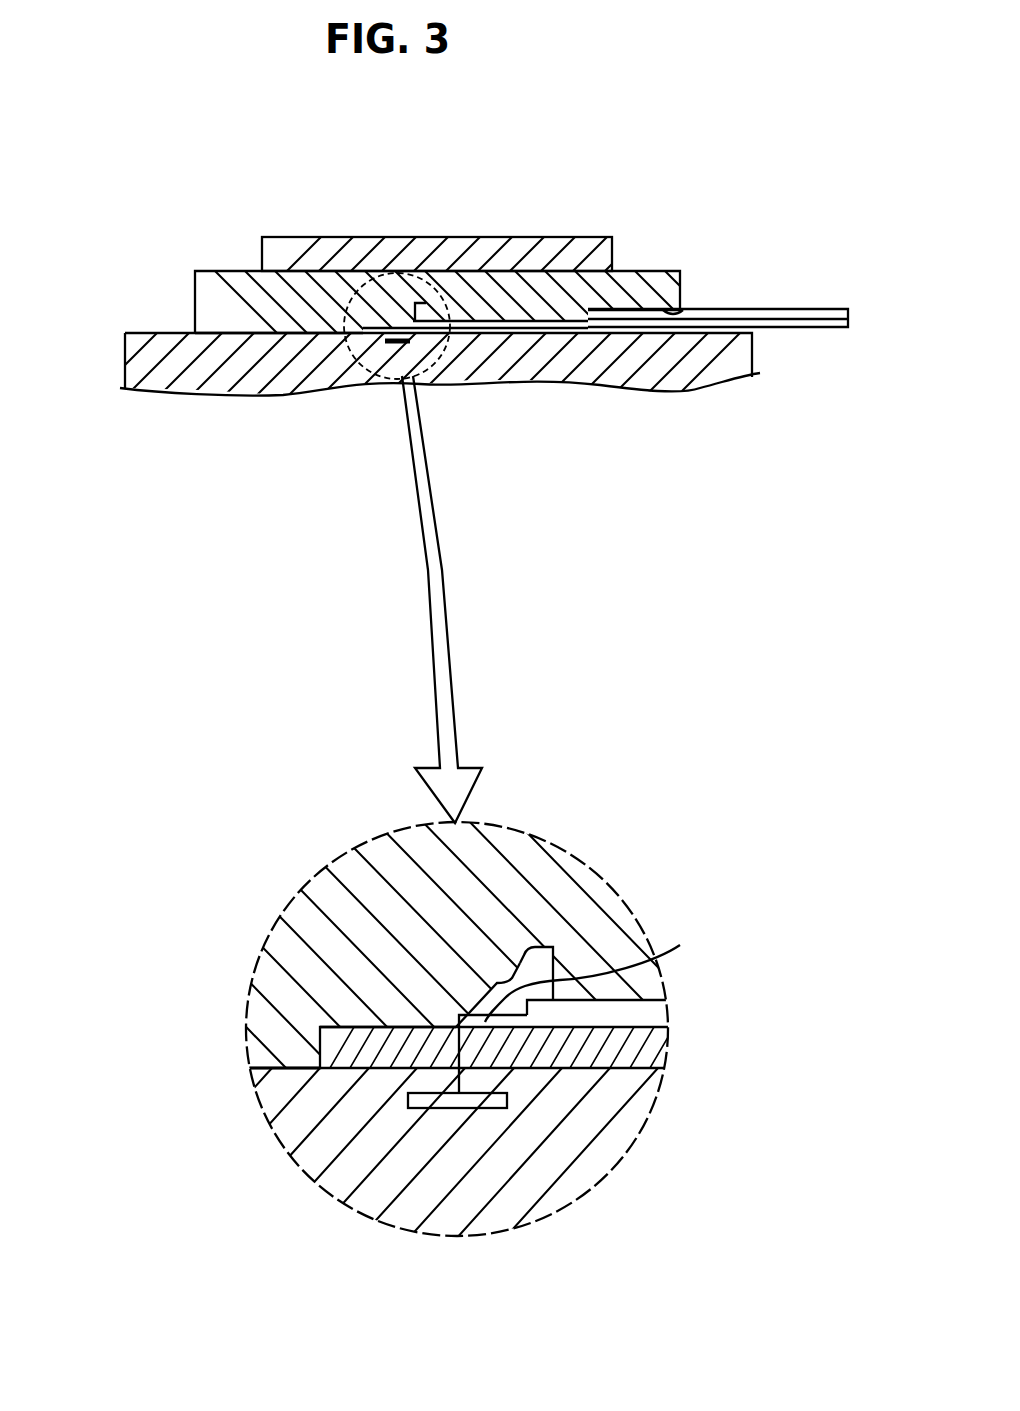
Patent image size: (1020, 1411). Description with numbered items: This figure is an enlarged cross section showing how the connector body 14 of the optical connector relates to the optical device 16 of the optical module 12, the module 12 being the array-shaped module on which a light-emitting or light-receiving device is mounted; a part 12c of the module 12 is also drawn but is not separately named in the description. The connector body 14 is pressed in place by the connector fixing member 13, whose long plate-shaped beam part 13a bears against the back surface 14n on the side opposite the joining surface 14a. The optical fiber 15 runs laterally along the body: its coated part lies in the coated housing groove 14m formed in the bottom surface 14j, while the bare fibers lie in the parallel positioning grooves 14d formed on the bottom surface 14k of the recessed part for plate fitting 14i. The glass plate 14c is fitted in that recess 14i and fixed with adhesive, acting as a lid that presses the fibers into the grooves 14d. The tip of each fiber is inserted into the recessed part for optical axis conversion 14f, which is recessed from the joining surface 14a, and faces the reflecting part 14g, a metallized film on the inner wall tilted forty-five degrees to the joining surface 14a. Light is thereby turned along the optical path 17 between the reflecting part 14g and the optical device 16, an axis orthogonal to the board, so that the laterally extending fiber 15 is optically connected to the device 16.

The optical module 12 is at (753, 352).
The pad portion of base 12c is at (275, 335).
The connector fixing member 13 is at (468, 196).
The beam part 13a is at (563, 237).
The connector body 14 is at (647, 271).
The joining surface 14a is at (158, 333).
The glass plate 14c is at (523, 333).
The positioning grooves 14d is at (492, 324).
The recessed part for optical axis conversion 14f is at (402, 312).
The reflecting part 14g is at (510, 957).
The recessed part for plate fitting 14i is at (318, 1040).
The bottom surface 14j is at (235, 665).
The bottom surface of the recessed part for plate fitting 14k is at (311, 1054).
The coated housing groove 14m is at (697, 310).
The back surface 14n is at (320, 262).
The optical fiber 15 is at (803, 309).
The optical device 16 is at (392, 343).
The optical path 17 is at (680, 945).